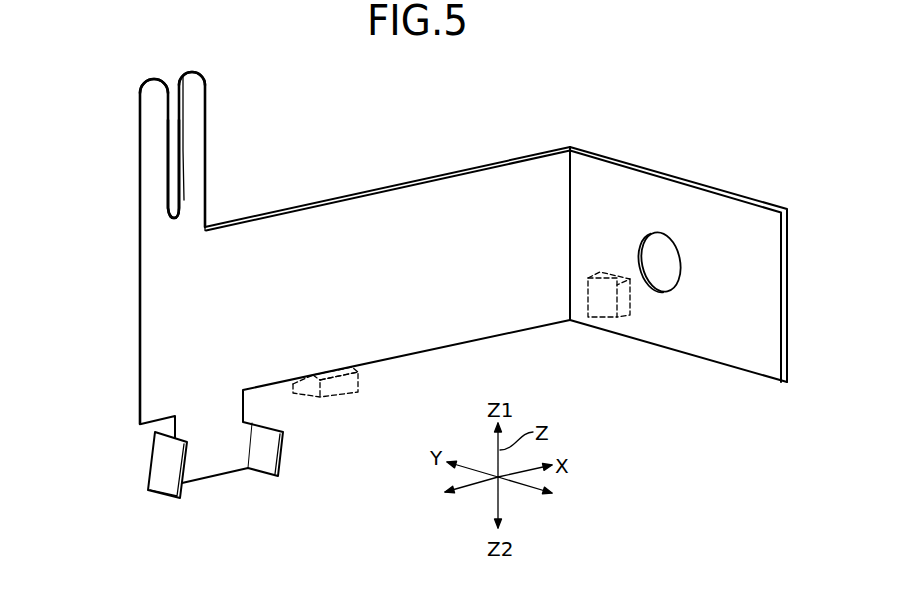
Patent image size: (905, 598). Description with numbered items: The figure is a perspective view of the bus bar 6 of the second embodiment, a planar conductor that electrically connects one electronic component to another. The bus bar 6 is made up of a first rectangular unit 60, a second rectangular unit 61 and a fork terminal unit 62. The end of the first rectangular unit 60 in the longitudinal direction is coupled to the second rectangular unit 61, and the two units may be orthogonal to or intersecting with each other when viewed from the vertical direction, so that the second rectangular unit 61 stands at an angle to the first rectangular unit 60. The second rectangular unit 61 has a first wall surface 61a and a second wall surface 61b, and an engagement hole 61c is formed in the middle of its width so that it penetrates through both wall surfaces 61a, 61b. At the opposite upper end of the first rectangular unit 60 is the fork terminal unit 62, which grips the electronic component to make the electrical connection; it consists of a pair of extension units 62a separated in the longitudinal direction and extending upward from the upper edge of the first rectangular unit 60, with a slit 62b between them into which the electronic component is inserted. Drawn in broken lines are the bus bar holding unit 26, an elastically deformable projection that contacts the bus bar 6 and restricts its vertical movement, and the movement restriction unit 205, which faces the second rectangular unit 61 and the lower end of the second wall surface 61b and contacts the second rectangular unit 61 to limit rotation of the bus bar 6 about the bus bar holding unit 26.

The bus bar 6 is at (512, 150).
The first rectangular unit 60 is at (413, 213).
The second rectangular unit 61 is at (615, 188).
The first wall surface 61a is at (742, 252).
The second wall surface 61b is at (688, 180).
The engagement hole 61c is at (647, 255).
The fork terminal unit 62 is at (205, 83).
The extension units 62a is at (193, 102).
The slit 62b is at (172, 135).
The bus bar holding unit 26 is at (358, 374).
The movement restriction unit 205 is at (610, 320).